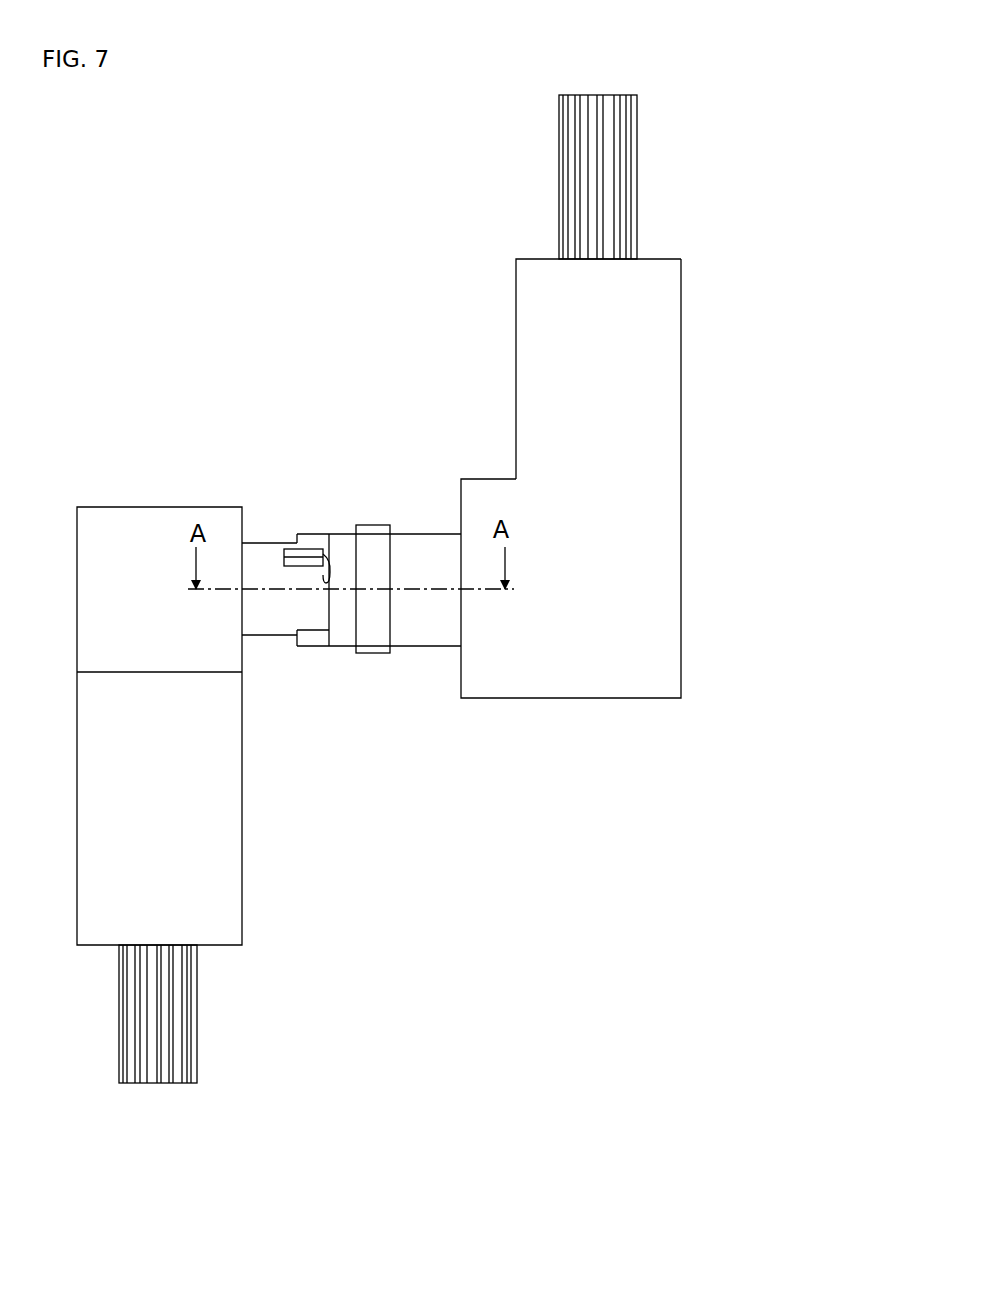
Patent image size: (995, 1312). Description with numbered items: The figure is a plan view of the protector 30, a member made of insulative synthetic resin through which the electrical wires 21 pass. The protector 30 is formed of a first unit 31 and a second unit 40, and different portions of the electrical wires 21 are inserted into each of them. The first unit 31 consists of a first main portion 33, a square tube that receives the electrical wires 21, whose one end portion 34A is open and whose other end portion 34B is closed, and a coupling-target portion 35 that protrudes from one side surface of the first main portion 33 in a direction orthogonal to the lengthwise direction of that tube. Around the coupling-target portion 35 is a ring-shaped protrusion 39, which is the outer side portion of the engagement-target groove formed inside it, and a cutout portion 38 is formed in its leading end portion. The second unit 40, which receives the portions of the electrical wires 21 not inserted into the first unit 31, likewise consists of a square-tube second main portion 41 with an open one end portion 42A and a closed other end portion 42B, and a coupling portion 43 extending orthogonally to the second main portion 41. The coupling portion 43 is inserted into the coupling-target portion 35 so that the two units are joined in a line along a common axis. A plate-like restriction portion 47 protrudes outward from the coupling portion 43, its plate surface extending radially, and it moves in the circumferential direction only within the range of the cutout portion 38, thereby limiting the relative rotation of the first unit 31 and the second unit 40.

The electrical wires 21 is at (615, 100).
The protector 30 is at (348, 335).
The first unit 31 is at (403, 701).
The first main portion 33 is at (503, 675).
The one end portion 34A is at (663, 259).
The other end portion 34B is at (648, 698).
The coupling-target portion 35 is at (429, 627).
The cutout portion 38 is at (328, 553).
The ring-shaped protrusion 39 is at (373, 538).
The second unit 40 is at (281, 684).
The second main portion 41 is at (222, 717).
The one end portion 42A is at (93, 945).
The other end portion 42B is at (117, 510).
The coupling portion 43 is at (268, 615).
The restriction portion 47 is at (305, 560).